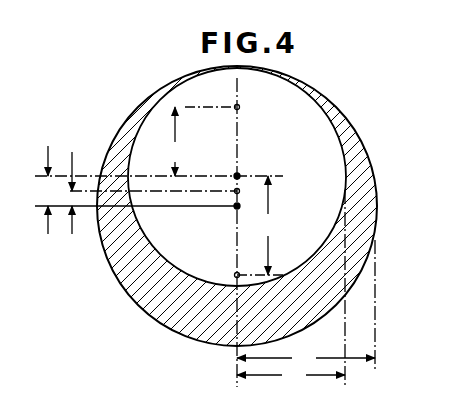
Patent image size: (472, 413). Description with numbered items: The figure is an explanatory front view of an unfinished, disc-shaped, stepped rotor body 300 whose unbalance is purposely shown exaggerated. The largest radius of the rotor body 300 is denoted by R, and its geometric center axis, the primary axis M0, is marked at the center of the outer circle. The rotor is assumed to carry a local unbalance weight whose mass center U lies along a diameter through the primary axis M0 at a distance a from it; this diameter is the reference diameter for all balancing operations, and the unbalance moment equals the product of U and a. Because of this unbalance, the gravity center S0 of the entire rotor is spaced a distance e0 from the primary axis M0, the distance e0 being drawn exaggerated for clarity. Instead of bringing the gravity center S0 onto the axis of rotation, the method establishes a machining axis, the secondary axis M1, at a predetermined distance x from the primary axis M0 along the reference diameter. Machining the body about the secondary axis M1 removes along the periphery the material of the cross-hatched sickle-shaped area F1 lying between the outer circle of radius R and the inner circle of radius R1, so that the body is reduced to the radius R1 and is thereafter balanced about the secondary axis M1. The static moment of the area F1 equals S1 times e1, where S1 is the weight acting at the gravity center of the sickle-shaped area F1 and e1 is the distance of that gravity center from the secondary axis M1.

The rotor body 300 is at (372, 168).
The sickle-shaped area F1 is at (141, 302).
The mass center of local unbalance weight U is at (219, 108).
The machining axis (secondary axis) M1 is at (159, 170).
The gravity center of the entire rotor S0 is at (164, 193).
The geometric center axis (primary axis) M0 is at (137, 214).
The weight acting in the center of gravity of the sickle-shaped area S1 is at (250, 270).
The predetermined distance between primary and secondary axes x is at (46, 190).
The distance of rotor gravity center from primary axis e0 is at (72, 193).
The distance of unbalance mass center from primary axis a is at (175, 141).
The distance of sickle-shaped area gravity center from secondary axis e1 is at (271, 225).
The largest radius of rotor body R is at (306, 306).
The reduced radius after machining R1 is at (291, 288).